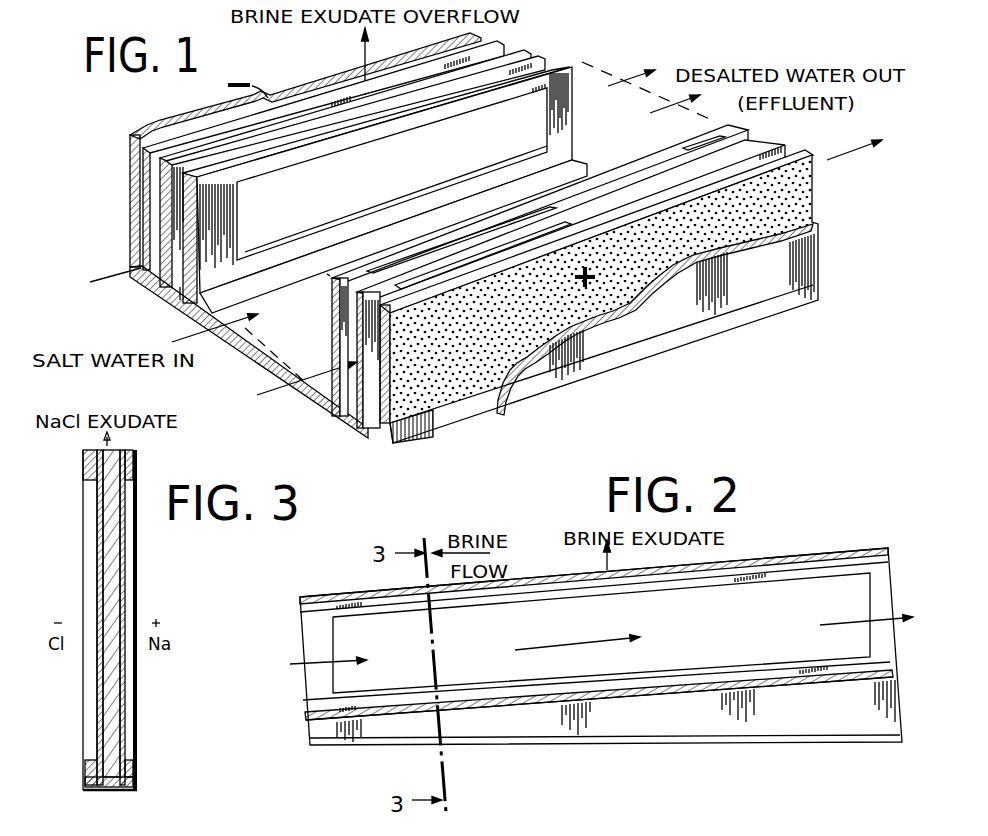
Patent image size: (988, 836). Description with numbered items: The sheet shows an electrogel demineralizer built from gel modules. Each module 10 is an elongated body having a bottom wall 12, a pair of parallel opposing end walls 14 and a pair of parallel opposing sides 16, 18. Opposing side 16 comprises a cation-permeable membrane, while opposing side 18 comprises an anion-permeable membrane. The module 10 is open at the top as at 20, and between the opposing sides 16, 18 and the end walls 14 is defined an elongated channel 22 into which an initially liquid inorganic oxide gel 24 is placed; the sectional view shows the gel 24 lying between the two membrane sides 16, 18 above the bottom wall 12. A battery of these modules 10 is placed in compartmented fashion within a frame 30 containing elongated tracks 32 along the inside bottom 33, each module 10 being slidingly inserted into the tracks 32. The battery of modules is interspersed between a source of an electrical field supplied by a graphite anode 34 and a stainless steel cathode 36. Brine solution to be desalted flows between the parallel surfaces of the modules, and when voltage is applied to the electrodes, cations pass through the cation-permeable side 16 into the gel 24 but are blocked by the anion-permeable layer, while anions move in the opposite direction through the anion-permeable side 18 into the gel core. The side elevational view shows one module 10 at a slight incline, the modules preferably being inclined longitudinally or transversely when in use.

In FIG. 1, the module 10 is at (364, 444).
In FIG. 2, the bottom wall 12 is at (628, 695).
In FIG. 3, the bottom wall 12 is at (113, 790).
In FIG. 1, the end walls 14 is at (360, 422).
In FIG. 2, the end walls 14 is at (305, 700).
In FIG. 2, the opposing side 16 is at (765, 636).
In FIG. 3, the opposing side 16 is at (140, 738).
In FIG. 3, the opposing side 18 is at (86, 716).
In FIG. 1, the open top 20 is at (757, 155).
In FIG. 3, the open top 20 is at (112, 447).
In FIG. 3, the elongated channel 22 is at (110, 580).
In FIG. 3, the inorganic oxide gel 24 is at (108, 543).
In FIG. 1, the frame 30 is at (599, 296).
In FIG. 1, the elongated tracks 32 is at (180, 287).
In FIG. 1, the inside bottom 33 is at (313, 337).
In FIG. 1, the graphite anode 34 is at (620, 272).
In FIG. 1, the stainless steel cathode 36 is at (157, 137).